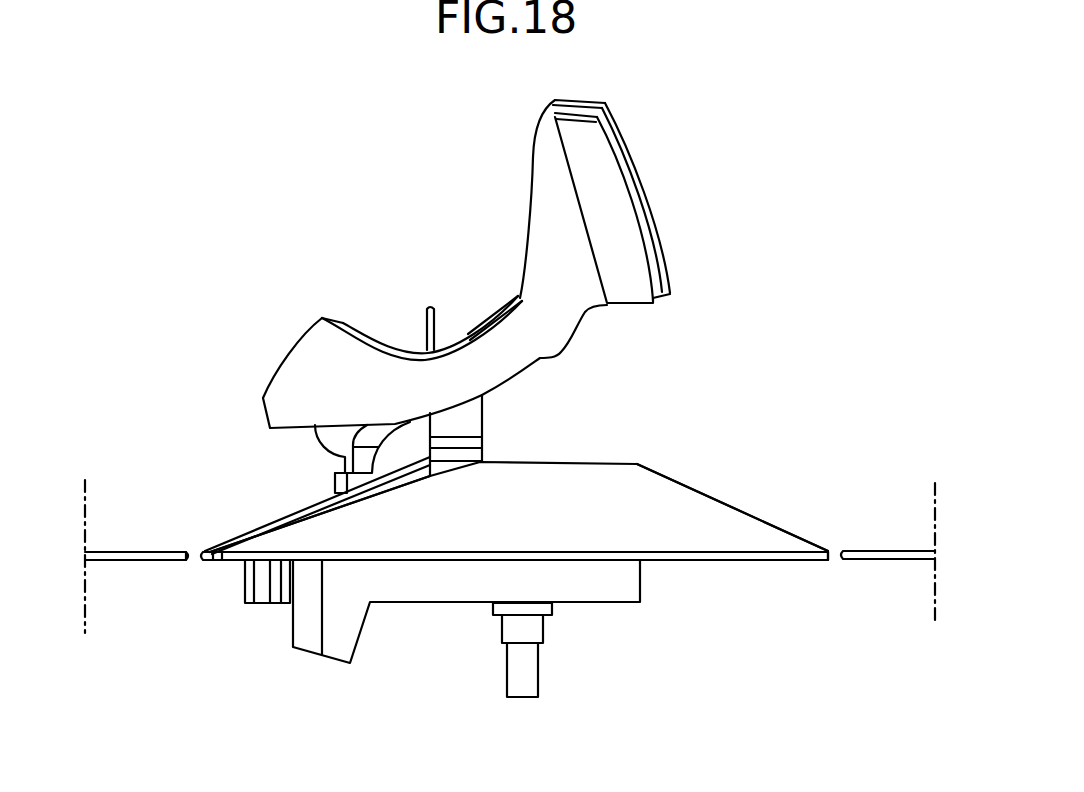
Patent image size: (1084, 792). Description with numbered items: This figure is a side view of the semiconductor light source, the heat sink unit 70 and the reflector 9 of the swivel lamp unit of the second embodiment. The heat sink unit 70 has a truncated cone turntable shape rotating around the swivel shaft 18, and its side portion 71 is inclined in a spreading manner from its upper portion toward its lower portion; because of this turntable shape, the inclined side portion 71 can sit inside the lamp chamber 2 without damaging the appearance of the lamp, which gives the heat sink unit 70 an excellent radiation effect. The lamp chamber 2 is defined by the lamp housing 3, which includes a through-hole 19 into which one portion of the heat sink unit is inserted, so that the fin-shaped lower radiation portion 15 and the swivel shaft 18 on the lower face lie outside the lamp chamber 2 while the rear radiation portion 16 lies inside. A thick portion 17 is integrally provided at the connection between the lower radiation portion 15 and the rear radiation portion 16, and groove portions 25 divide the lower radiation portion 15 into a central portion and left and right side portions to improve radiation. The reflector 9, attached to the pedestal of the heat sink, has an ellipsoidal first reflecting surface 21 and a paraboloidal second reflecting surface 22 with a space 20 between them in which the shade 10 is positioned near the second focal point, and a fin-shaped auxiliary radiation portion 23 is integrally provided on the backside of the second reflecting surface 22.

The lamp chamber 2 is at (819, 339).
The lamp housing 3 is at (123, 552).
The reflector 9 is at (290, 347).
The shade 10 is at (428, 305).
The lower radiation portion 15 is at (303, 617).
The rear radiation portion 16 is at (472, 423).
The thick portion 17 is at (335, 482).
The swivel shaft 18 is at (530, 668).
The through-hole 19 is at (190, 562).
The space 20 is at (473, 302).
The first reflecting surface 21 is at (345, 332).
The second reflecting surface 22 is at (530, 178).
The auxiliary radiation portion 23 is at (633, 190).
The groove portions 25 is at (300, 511).
The heat sink unit 70 is at (657, 468).
The side portion 71 is at (227, 542).